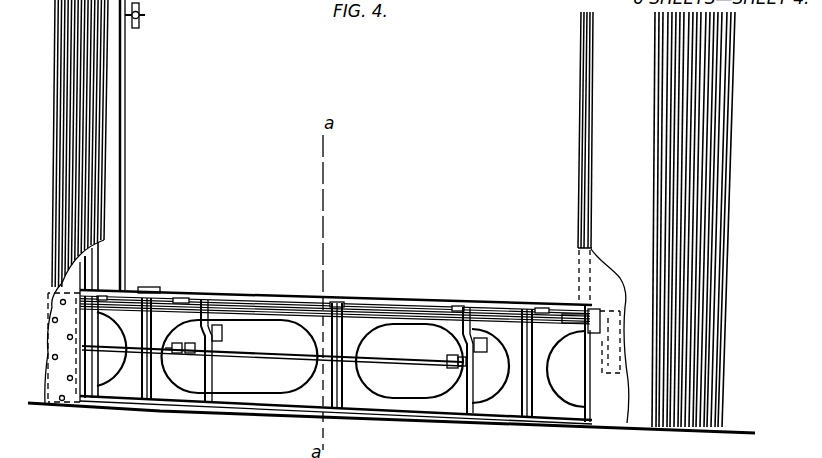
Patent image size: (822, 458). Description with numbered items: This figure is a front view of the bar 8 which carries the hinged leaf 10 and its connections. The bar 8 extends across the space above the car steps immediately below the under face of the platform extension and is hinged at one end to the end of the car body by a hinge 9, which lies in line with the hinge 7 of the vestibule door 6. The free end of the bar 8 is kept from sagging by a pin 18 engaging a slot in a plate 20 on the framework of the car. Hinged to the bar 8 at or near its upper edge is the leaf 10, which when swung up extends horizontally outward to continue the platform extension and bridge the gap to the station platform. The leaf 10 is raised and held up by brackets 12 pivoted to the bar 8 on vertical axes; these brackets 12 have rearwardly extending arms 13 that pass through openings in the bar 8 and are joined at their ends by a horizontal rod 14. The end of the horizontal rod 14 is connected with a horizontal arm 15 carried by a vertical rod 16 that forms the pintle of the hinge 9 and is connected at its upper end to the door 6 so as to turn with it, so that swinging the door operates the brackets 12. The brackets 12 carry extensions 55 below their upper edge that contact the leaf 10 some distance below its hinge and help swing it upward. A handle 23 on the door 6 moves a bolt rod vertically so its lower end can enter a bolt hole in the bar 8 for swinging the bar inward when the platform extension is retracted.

The vestibule door 6 is at (116, 190).
The hinge 7 is at (95, 258).
The bar 8 is at (362, 320).
The hinge 9 is at (88, 382).
The leaf 10 is at (265, 295).
The brackets 12 is at (198, 390).
The rearwardly extending arms 13 is at (459, 369).
The horizontal rod 14 is at (397, 361).
The horizontal arm 15 is at (80, 353).
The vertical rod 16 is at (147, 288).
The pin 18 is at (576, 336).
The plate 20 is at (598, 312).
The handle 23 is at (146, 15).
The extensions 55 is at (222, 334).